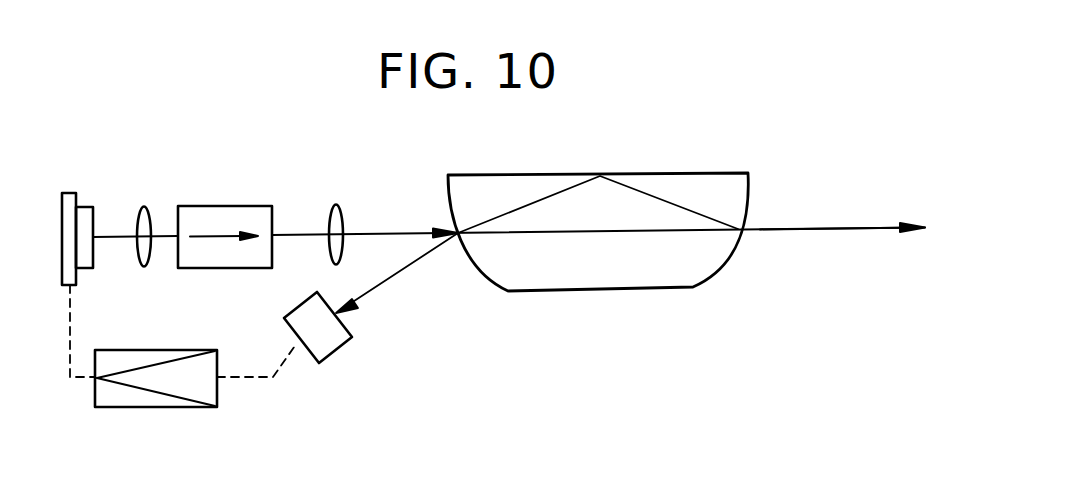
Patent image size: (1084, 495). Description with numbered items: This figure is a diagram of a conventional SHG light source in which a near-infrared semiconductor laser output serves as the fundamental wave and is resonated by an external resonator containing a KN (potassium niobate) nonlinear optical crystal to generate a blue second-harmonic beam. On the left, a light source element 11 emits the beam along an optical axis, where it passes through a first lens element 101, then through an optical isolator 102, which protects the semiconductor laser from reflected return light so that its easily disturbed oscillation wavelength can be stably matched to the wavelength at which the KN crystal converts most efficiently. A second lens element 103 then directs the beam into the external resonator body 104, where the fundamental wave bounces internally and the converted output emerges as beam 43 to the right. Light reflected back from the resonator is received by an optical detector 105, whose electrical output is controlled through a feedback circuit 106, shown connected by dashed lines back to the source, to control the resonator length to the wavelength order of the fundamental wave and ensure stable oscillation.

The semiconductor laser light source 11 is at (82, 213).
The collimating lens 101 is at (143, 205).
The optical isolator 102 is at (220, 212).
The focusing lens 103 is at (335, 207).
The monolithic ring resonator 104 is at (660, 185).
The output laser beam 43 is at (830, 201).
The optical detector 105 is at (337, 338).
The feedback circuit 106 is at (153, 403).